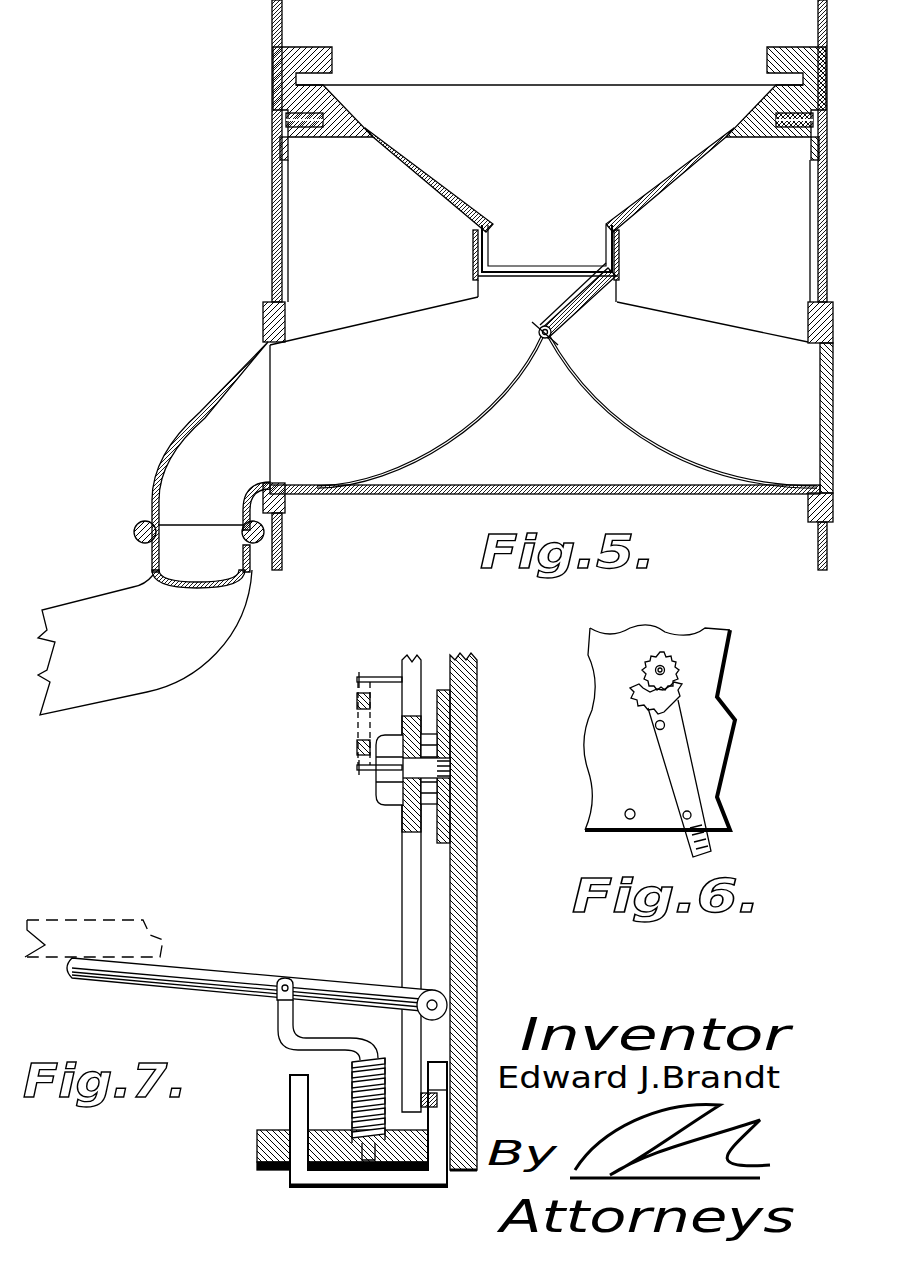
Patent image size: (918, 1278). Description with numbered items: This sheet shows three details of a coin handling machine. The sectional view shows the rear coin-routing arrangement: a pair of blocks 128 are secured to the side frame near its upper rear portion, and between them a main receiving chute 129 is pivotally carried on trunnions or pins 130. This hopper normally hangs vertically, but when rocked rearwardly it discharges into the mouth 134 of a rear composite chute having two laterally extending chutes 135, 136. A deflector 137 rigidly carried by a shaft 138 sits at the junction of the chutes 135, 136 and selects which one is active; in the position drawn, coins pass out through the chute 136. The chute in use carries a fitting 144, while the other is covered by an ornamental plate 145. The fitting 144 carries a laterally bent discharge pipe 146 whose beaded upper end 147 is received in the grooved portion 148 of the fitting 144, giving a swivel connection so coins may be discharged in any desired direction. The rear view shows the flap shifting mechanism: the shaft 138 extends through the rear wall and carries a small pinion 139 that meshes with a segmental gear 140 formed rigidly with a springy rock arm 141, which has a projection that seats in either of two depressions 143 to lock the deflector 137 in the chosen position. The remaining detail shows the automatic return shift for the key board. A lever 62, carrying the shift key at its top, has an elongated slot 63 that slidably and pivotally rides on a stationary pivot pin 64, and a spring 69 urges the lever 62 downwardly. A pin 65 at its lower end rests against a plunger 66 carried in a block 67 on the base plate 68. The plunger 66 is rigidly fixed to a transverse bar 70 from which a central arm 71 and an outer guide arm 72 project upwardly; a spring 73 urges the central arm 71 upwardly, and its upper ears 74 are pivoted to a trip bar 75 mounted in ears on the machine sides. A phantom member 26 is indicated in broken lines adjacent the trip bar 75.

In FIG. 7, the phantom member 26 is at (105, 915).
In FIG. 7, the lever 62 is at (412, 862).
In FIG. 7, the elongated slot 63 is at (410, 808).
In FIG. 7, the stationary pivot pin 64 is at (415, 765).
In FIG. 7, the pin 65 is at (434, 1078).
In FIG. 7, the plunger 66 is at (437, 1100).
In FIG. 7, the block 67 is at (262, 1140).
In FIG. 7, the base plate 68 is at (272, 1170).
In FIG. 7, the spring 69 is at (352, 698).
In FIG. 7, the transverse base or bar 70 is at (403, 1172).
In FIG. 7, the central arm 71 is at (368, 1150).
In FIG. 7, the outer guide arm 72 is at (297, 1105).
In FIG. 7, the spring 73 is at (352, 1102).
In FIG. 7, the upper ears 74 is at (280, 1000).
In FIG. 7, the trip bar 75 is at (246, 977).
In FIG. 5, the blocks 128 is at (363, 44).
In FIG. 5, the main receiving chute 129 is at (498, 118).
In FIG. 5, the trunnions or pins 130 is at (308, 120).
In FIG. 5, the mouth 134 is at (470, 252).
In FIG. 5, the laterally extending chute 135 is at (720, 355).
In FIG. 5, the laterally extending chute 136 is at (332, 355).
In FIG. 5, the deflector 137 is at (562, 312).
In FIG. 5, the shaft 138 is at (540, 336).
In FIG. 6, the shaft 138 is at (663, 665).
In FIG. 6, the small pinion 139 is at (680, 652).
In FIG. 6, the segmental gear 140 is at (630, 692).
In FIG. 6, the rock arm 141 is at (676, 775).
In FIG. 6, the apertures or depressions 143 is at (630, 805).
In FIG. 5, the fitting 144 is at (237, 360).
In FIG. 5, the plate 145 is at (818, 428).
In FIG. 5, the discharge pipe 146 is at (203, 617).
In FIG. 5, the beaded upper end 147 is at (136, 538).
In FIG. 5, the grooved portion 148 is at (138, 522).